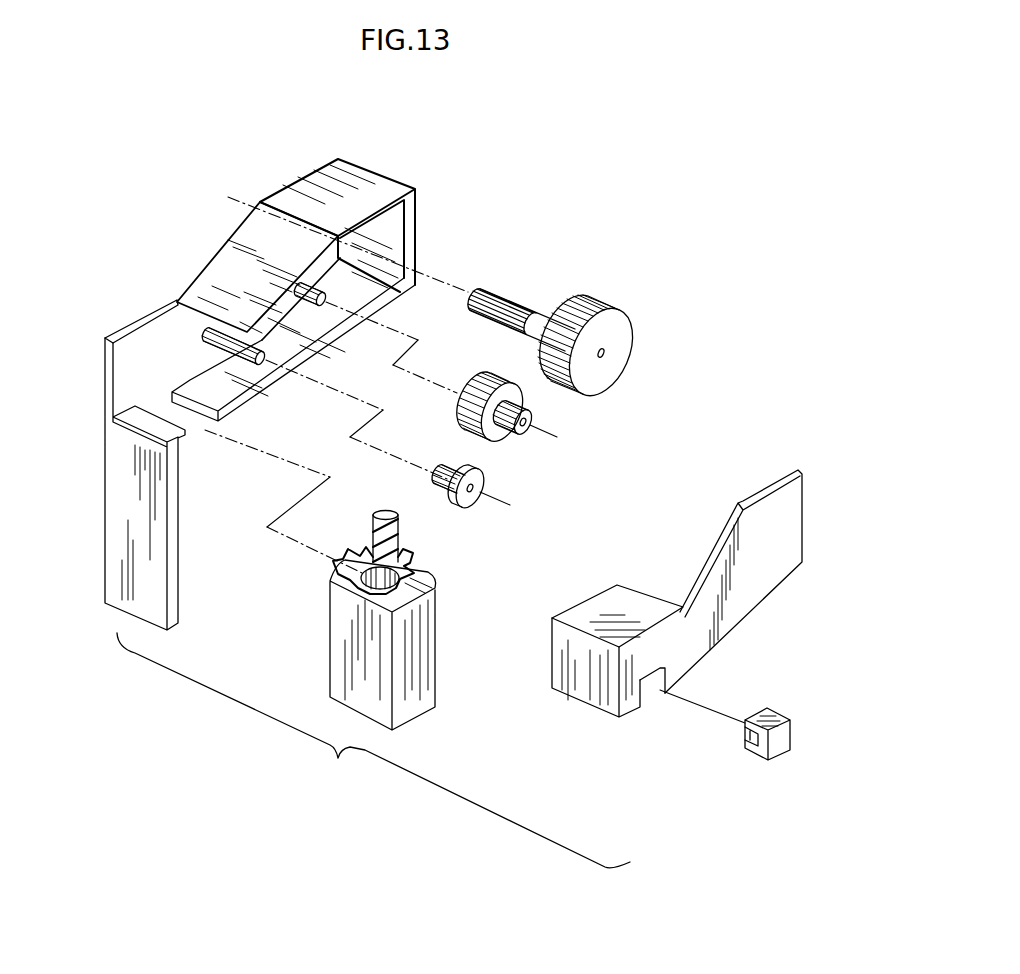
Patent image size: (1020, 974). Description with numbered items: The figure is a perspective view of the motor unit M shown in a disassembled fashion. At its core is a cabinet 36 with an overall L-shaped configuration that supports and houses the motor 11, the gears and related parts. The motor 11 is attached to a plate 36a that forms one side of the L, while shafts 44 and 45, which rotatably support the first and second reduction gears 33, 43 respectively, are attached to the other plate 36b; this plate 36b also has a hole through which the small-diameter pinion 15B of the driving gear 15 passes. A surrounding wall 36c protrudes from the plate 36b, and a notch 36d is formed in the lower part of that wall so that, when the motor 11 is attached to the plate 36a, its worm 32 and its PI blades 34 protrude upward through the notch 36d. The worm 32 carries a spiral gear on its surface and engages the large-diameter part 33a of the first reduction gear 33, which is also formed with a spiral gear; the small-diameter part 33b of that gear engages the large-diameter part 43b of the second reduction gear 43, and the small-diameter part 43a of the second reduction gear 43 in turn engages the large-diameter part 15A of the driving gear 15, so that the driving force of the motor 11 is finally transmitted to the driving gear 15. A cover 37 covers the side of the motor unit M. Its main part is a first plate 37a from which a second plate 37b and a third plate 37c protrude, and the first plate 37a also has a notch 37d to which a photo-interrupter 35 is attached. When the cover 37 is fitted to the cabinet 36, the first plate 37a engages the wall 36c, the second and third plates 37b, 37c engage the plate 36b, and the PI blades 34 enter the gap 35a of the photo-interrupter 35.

The motor 11 is at (347, 654).
The driving gear 15 is at (582, 306).
The large-diameter part of the driving gear 15A is at (592, 301).
The small-diameter pinion of the driving gear 15B is at (503, 292).
The worm 32 is at (373, 538).
The first reduction gear 33 is at (467, 488).
The large-diameter part of the first reduction gear 33a is at (452, 498).
The small-diameter part of the first reduction gear 33b is at (442, 470).
The PI blades 34 is at (330, 583).
The photo-interrupter 35 is at (758, 757).
The gap of the photo-interrupter 35a is at (743, 735).
The cabinet 36 is at (225, 394).
The plate 36a is at (118, 568).
The plate 36b is at (133, 318).
The surrounding wall 36c is at (218, 273).
The notch 36d is at (195, 427).
The cover 37 is at (694, 630).
The first plate 37a is at (786, 530).
The second plate 37b is at (618, 595).
The third plate 37c is at (567, 683).
The notch 37d is at (643, 722).
The second reduction gear 43 is at (521, 412).
The small-diameter part of the second reduction gear 43a is at (527, 418).
The large-diameter part of the second reduction gear 43b is at (487, 373).
The shaft 44 is at (243, 368).
The shaft 45 is at (312, 303).
The motor unit M is at (373, 750).